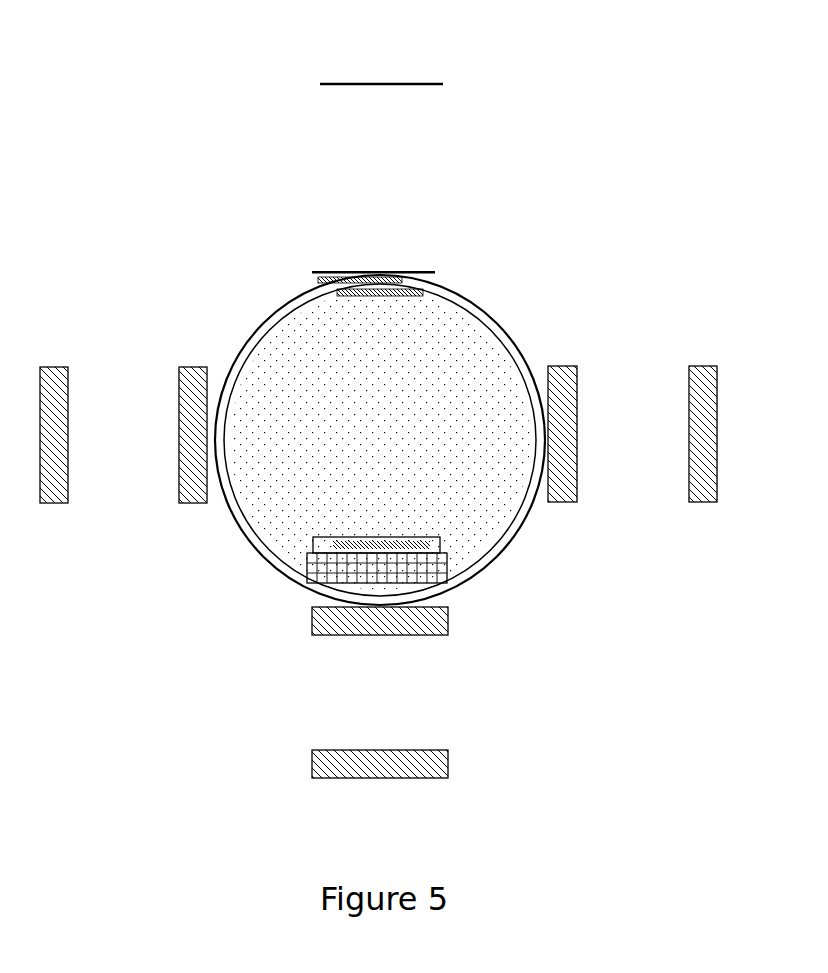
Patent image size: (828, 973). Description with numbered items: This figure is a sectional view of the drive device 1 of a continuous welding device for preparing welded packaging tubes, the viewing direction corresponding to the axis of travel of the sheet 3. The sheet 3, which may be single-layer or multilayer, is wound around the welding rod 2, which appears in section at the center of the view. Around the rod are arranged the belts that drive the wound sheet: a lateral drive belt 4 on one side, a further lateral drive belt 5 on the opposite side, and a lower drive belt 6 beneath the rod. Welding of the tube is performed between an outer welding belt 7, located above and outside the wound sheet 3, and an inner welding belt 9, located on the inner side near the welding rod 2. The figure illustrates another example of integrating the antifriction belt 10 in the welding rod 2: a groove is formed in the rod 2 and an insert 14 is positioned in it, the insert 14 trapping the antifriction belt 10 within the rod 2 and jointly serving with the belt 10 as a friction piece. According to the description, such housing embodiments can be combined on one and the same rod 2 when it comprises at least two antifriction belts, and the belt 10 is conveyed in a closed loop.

The sectional view of the drive device 1 is at (100, 110).
The welding rod 2 is at (436, 342).
The sheet 3 is at (243, 540).
The lateral drive belt 4 is at (190, 402).
The lateral drive belt 5 is at (703, 410).
The lower drive belt 6 is at (356, 620).
The outer welding belt 7 is at (370, 268).
The inner welding belt 9 is at (380, 536).
The antifriction belt 10 is at (433, 582).
The insert 14 is at (316, 562).